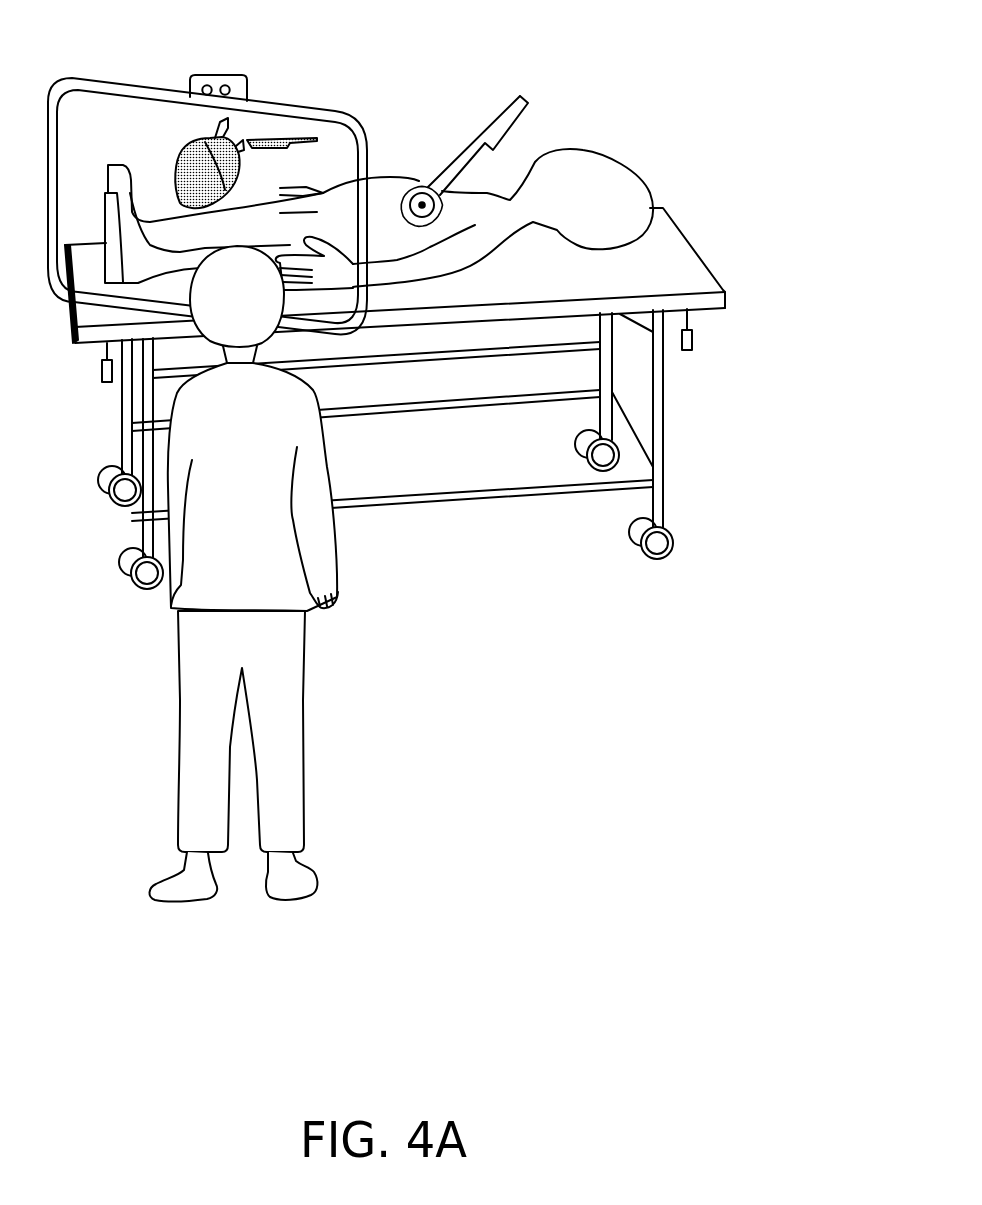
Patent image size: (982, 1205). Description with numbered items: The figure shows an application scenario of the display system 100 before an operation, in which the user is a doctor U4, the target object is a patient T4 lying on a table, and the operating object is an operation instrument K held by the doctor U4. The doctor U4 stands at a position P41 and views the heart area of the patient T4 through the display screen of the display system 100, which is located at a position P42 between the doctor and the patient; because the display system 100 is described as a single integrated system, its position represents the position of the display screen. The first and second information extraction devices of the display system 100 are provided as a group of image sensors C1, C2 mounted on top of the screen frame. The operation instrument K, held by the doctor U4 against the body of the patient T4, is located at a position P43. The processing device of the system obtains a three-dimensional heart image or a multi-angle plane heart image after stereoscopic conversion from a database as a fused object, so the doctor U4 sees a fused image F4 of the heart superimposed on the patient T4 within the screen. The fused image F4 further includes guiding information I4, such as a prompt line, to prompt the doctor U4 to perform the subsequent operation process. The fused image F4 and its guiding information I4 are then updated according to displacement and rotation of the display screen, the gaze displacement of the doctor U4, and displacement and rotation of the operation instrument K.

The display system 100 is at (204, 173).
The image sensor C1 is at (224, 86).
The image sensor C2 is at (205, 86).
The position P42 is at (207, 194).
The fused image F4 is at (193, 138).
The guiding information I4 is at (248, 198).
The position P43 is at (547, 78).
The operation instrument K is at (482, 136).
The patient T4 is at (603, 177).
The doctor U4 is at (304, 609).
The position P41 is at (233, 912).